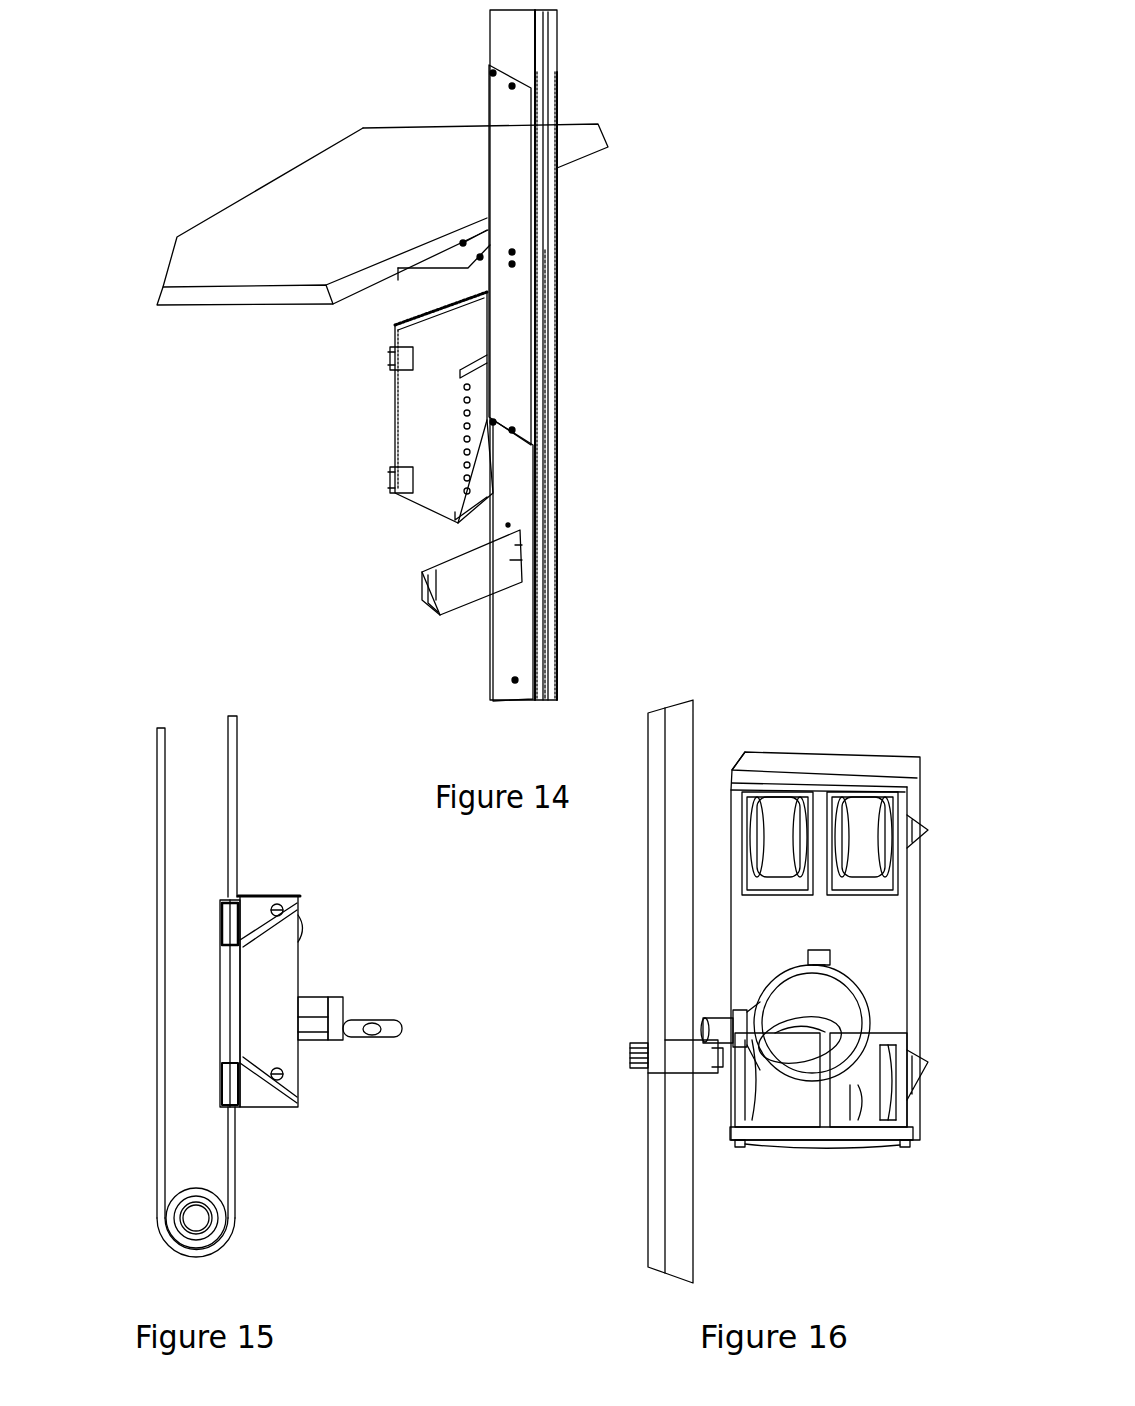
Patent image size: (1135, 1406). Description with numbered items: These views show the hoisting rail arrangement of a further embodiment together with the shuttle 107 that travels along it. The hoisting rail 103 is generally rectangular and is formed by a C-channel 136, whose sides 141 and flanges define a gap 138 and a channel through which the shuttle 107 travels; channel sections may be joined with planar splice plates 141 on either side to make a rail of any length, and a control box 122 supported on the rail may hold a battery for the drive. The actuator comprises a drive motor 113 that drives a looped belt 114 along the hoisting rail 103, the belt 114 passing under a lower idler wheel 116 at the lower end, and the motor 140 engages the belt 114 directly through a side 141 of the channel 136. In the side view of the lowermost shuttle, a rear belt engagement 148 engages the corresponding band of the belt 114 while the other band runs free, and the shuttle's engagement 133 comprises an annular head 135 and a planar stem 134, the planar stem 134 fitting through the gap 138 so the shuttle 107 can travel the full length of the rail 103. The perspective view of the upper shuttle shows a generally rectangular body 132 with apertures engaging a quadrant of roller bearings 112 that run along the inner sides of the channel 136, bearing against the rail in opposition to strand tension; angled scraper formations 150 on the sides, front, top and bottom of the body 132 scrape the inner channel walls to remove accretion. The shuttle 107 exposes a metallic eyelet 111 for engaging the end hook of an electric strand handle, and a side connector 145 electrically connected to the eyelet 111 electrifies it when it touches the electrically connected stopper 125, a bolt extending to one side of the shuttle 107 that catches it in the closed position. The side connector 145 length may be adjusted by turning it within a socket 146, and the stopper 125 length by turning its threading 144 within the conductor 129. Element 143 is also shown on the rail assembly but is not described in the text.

In FIG. 14, the hoisting rail 103 is at (568, 466).
In FIG. 16, the shuttle 107 is at (904, 708).
In FIG. 15, the metallic eyelet 111 is at (380, 1030).
In FIG. 16, the metallic eyelet 111 is at (801, 1047).
In FIG. 15, the roller bearings 112 is at (300, 931).
In FIG. 16, the roller bearings 112 is at (875, 812).
In FIG. 14, the drive motor 113 is at (440, 612).
In FIG. 15, the looped belt 114 is at (160, 790).
In FIG. 15, the lower idler wheel 116 is at (222, 1230).
In FIG. 14, the control box 122 is at (278, 190).
In FIG. 16, the stopper 125 is at (690, 1062).
In FIG. 16, the conductor 129 is at (660, 1209).
In FIG. 16, the body 132 is at (922, 966).
In FIG. 15, the engagement 133 is at (340, 992).
In FIG. 16, the engagement 133 is at (868, 1005).
In FIG. 15, the planar stem 134 is at (313, 1060).
In FIG. 16, the planar stem 134 is at (830, 958).
In FIG. 15, the annular head 135 is at (341, 1056).
In FIG. 16, the annular head 135 is at (871, 1032).
In FIG. 14, the C-channel 136 is at (557, 33).
In FIG. 14, the gap 138 is at (549, 676).
In FIG. 14, the motor 140 is at (560, 320).
In FIG. 14, the side 141 is at (515, 618).
In FIG. 14, the control box 143 is at (420, 416).
In FIG. 16, the threading 144 is at (628, 1056).
In FIG. 16, the side connector 145 is at (722, 1030).
In FIG. 16, the socket 146 is at (746, 1020).
In FIG. 15, the rear belt engagement 148 is at (230, 1010).
In FIG. 15, the scraper formations 150 is at (263, 928).
In FIG. 16, the scraper formations 150 is at (928, 843).